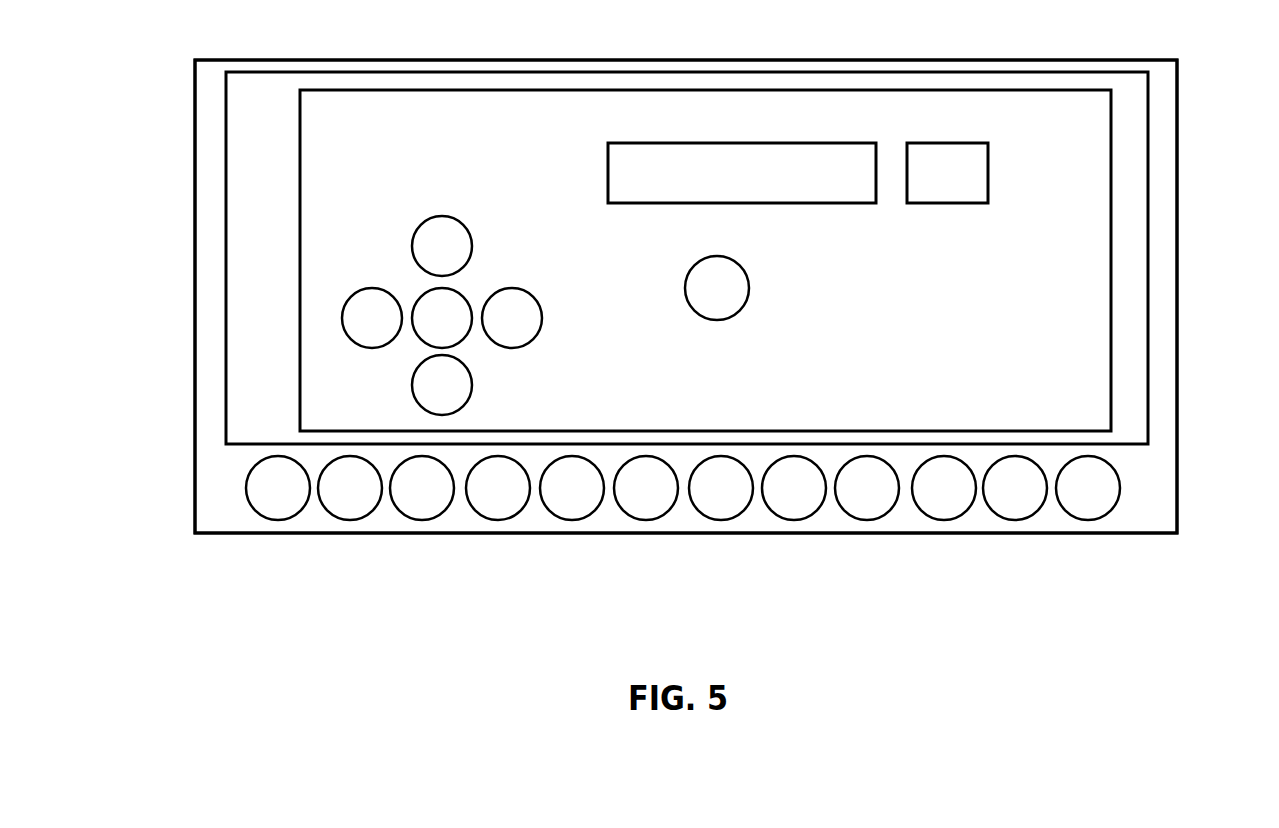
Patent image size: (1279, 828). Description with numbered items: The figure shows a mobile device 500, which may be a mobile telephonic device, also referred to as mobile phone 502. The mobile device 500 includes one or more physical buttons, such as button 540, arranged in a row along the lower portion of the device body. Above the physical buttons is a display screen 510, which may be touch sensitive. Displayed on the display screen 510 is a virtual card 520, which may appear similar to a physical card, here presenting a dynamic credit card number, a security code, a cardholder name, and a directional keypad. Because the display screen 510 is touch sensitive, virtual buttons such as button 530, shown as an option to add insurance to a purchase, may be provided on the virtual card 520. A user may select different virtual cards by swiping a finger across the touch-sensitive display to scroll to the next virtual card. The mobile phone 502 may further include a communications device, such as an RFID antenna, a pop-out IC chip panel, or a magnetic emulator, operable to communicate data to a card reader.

The mobile device 500 is at (726, 296).
The mobile phone 502 is at (197, 208).
The display screen 510 is at (226, 120).
The virtual card 520 is at (300, 318).
The virtual button 530 is at (685, 290).
The physical button 540 is at (247, 488).